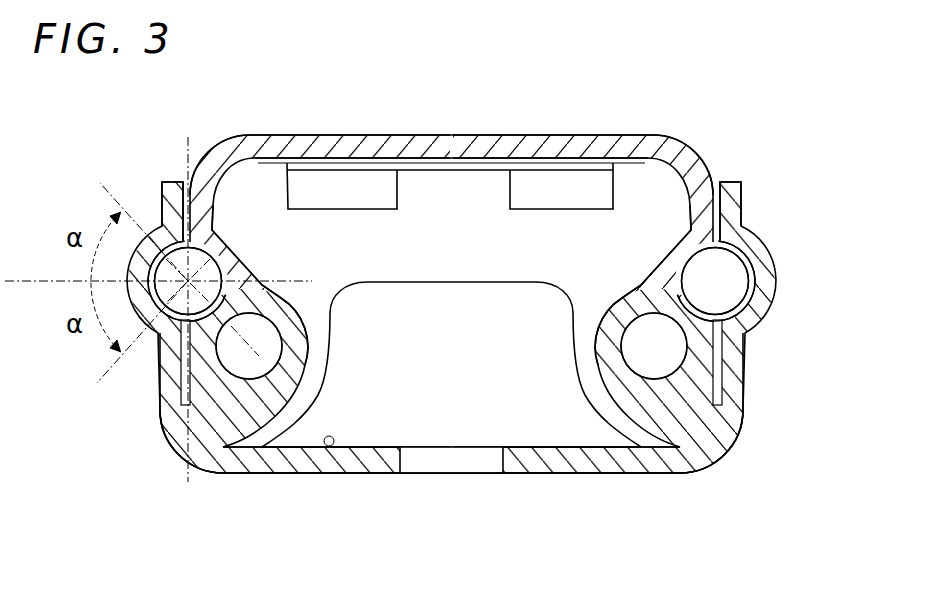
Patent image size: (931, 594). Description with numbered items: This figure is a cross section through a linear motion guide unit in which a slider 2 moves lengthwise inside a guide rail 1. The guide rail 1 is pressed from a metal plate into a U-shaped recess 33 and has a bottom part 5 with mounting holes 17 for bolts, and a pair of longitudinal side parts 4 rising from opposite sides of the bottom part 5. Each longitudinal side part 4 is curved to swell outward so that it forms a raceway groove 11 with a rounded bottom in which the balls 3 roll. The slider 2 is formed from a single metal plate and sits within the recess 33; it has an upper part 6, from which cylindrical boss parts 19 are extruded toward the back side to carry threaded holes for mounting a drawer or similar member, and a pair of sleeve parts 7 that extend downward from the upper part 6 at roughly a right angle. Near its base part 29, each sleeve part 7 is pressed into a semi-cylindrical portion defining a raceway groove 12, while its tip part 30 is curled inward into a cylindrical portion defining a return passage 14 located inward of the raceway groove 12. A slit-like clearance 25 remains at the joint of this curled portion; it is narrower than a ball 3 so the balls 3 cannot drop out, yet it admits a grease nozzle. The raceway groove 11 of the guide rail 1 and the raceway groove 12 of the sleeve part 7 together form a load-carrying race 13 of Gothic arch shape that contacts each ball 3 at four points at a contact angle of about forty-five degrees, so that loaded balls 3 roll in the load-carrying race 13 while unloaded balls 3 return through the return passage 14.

The guide rail 1 is at (553, 466).
The slider 2 is at (488, 138).
The balls 3 is at (746, 316).
The longitudinal side parts 4 is at (167, 237).
The bottom part 5 is at (370, 462).
The upper part 6 is at (429, 147).
The sleeve parts 7 is at (242, 192).
The raceway groove 11 is at (731, 288).
The raceway groove 12 is at (700, 262).
The load-carrying race 13 is at (735, 212).
The return passage 14 is at (212, 466).
The mounting holes 17 is at (412, 476).
The boss part 19 is at (332, 190).
The clearance 25 is at (252, 303).
The base part 29 is at (218, 160).
The tip part 30 is at (277, 397).
The recess 33 is at (343, 475).